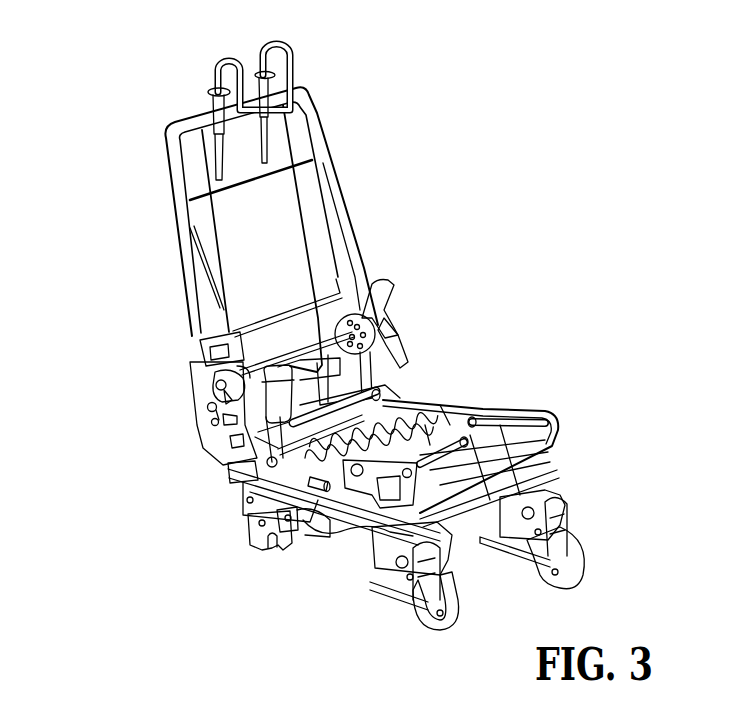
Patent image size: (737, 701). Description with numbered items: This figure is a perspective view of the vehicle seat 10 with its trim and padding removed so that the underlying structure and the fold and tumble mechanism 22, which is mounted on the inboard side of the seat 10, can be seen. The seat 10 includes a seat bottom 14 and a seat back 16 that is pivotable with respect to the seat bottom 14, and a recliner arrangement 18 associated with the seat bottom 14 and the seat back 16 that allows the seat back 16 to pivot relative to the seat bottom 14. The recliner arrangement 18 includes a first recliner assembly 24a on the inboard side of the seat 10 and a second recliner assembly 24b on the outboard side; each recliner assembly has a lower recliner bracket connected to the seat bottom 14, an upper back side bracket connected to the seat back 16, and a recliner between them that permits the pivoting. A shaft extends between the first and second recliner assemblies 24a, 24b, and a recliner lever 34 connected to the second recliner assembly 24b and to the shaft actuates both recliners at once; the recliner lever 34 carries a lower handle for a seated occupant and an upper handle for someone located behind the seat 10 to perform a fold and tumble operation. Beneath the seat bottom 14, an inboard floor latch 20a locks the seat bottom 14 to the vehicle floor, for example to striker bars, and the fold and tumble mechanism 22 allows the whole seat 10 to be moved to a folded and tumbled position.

The vehicle seat 10 is at (390, 187).
The seat bottom 14 is at (567, 427).
The seat back 16 is at (157, 127).
The recliner arrangement 18 is at (397, 298).
The inboard floor latch 20a is at (248, 552).
The fold and tumble mechanism 22 is at (190, 346).
The first recliner assembly 24a is at (180, 393).
The second recliner assembly 24b is at (398, 325).
The recliner lever 34 is at (393, 287).